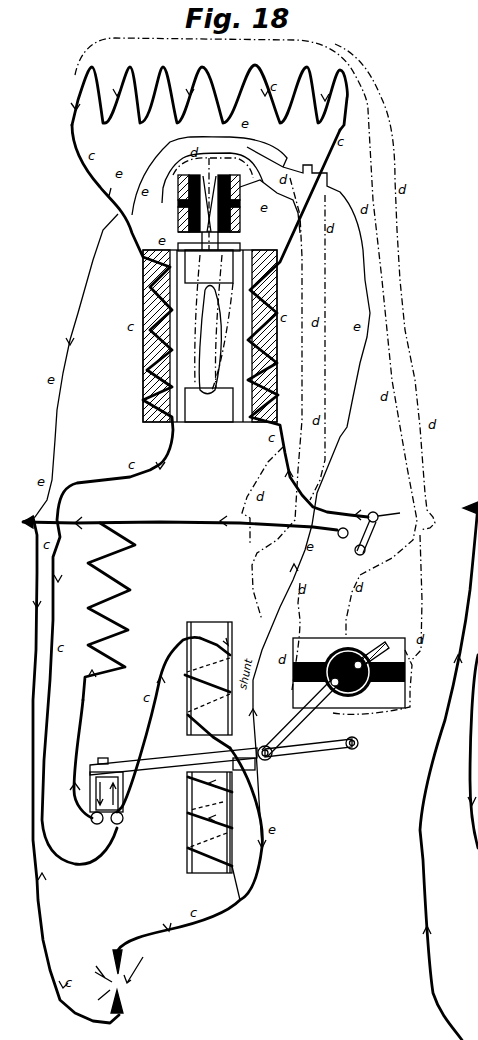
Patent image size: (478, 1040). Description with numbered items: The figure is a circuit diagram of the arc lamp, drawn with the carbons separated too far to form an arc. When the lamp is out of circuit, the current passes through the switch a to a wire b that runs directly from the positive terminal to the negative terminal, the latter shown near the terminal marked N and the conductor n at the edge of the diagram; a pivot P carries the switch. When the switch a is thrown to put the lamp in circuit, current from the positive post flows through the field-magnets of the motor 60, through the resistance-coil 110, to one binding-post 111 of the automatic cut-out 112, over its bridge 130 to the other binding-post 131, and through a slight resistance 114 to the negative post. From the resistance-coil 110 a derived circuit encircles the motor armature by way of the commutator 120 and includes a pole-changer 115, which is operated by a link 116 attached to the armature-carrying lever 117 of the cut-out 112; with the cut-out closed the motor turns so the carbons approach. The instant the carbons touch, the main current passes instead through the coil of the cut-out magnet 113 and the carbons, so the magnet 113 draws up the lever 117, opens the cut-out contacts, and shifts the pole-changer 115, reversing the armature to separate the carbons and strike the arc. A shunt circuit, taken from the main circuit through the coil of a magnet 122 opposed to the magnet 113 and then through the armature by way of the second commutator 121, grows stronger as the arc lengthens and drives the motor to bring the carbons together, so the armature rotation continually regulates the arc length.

The resistance-coil 110 is at (209, 93).
The commutator 120 is at (209, 207).
The commutator 121 is at (179, 225).
The motor 60 is at (217, 336).
The resistance 114 is at (117, 611).
The cut-out magnet 113 is at (208, 677).
The magnet 122 is at (213, 836).
The pole-changer 115 is at (349, 646).
The link 116 is at (308, 719).
The armature carrying lever 117 is at (147, 764).
The automatic cut-out 112 is at (106, 778).
The bridge 130 is at (118, 793).
The binding-post 131 is at (96, 824).
The binding-post 111 is at (121, 823).
The pivot switch P is at (384, 508).
The switch a is at (370, 537).
The wire b is at (185, 519).
The terminal N is at (246, 506).
The conductor n is at (449, 574).